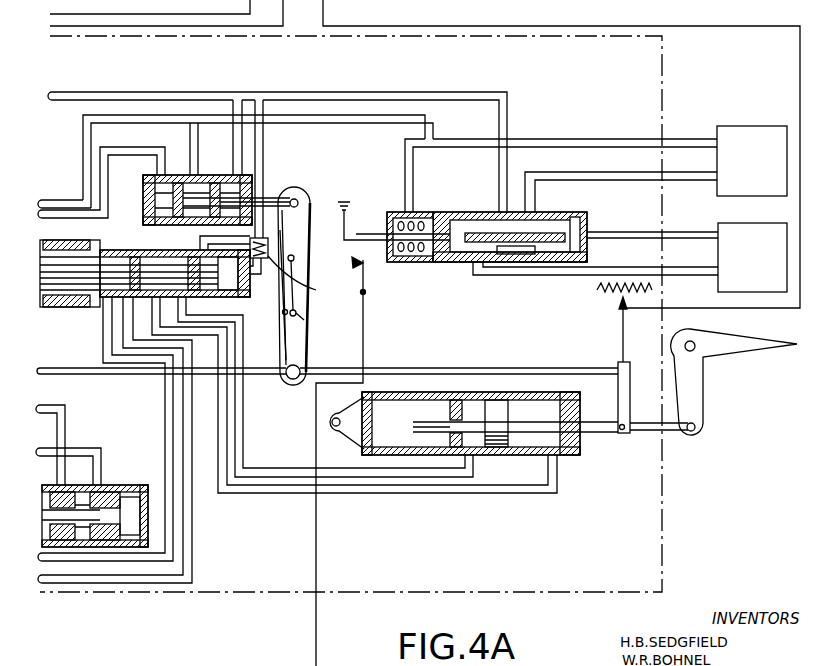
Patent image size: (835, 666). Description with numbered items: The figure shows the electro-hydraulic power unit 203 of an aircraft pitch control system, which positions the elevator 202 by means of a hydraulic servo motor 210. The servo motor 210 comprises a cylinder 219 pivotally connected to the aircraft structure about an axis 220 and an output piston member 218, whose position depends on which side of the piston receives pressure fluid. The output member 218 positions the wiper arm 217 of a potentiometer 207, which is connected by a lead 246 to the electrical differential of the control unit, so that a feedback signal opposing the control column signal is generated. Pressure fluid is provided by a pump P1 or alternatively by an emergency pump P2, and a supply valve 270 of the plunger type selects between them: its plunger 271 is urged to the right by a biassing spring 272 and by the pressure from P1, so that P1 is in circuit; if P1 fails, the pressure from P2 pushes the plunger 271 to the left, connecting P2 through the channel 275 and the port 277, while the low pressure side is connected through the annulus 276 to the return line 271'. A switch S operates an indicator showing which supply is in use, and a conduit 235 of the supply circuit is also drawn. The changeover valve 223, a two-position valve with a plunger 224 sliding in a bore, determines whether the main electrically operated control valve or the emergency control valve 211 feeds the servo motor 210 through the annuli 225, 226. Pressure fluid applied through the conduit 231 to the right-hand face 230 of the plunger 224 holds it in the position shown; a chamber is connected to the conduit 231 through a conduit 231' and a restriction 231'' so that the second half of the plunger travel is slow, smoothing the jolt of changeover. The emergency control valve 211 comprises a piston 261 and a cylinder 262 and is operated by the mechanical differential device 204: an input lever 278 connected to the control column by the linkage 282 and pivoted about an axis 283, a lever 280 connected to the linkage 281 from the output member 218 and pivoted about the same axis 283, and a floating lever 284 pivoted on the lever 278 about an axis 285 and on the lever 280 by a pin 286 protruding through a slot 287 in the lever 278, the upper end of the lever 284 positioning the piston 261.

The elevator 202 is at (720, 356).
The electro-hydraulic power unit 203 is at (585, 555).
The mechanical differential device 204 is at (306, 200).
The potentiometer 207 is at (622, 302).
The hydraulic servo motor 210 is at (484, 454).
The emergency control valve 211 is at (256, 198).
The wiper arm 217 is at (625, 328).
The output member 218 is at (592, 433).
The cylinder 219 is at (496, 405).
The axis 220 is at (330, 426).
The changeover valve 223 is at (130, 297).
The plunger 224 is at (53, 264).
The annulus 225 is at (112, 258).
The annulus 226 is at (177, 290).
The right-hand face 230 is at (82, 27).
The conduit 231 is at (280, 169).
The conduit 231' is at (223, 252).
The restriction 231'' is at (314, 280).
The pressure supply conduit 235 is at (393, 120).
The lead 246 is at (560, 26).
The piston 261 is at (273, 197).
The cylinder 262 is at (144, 210).
The supply valve 270 is at (487, 207).
The plunger 271 is at (502, 273).
The low pressure line 271' is at (595, 212).
The biassing spring 272 is at (413, 212).
The channel 275 is at (545, 243).
The annulus 276 is at (519, 255).
The port 277 is at (432, 218).
The input lever 278 is at (290, 350).
The output lever 280 is at (306, 372).
The linkage 281 is at (450, 368).
The linkage 282 is at (74, 374).
The axis 283 is at (310, 203).
The floating lever 284 is at (300, 212).
The axis 285 is at (294, 259).
The pin 286 is at (302, 313).
The slot 287 is at (306, 321).
The switch S is at (341, 434).
The pump P1 is at (752, 161).
The pump P2 is at (752, 257).